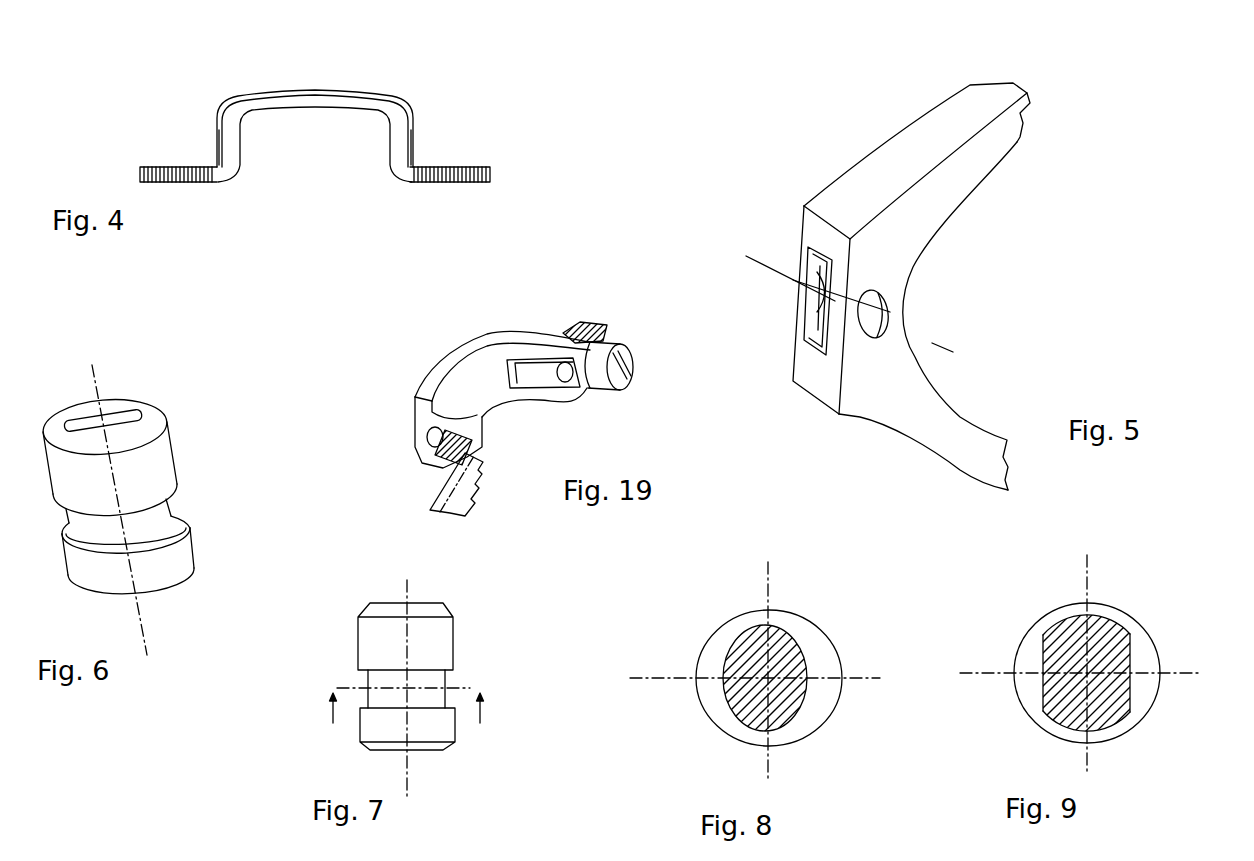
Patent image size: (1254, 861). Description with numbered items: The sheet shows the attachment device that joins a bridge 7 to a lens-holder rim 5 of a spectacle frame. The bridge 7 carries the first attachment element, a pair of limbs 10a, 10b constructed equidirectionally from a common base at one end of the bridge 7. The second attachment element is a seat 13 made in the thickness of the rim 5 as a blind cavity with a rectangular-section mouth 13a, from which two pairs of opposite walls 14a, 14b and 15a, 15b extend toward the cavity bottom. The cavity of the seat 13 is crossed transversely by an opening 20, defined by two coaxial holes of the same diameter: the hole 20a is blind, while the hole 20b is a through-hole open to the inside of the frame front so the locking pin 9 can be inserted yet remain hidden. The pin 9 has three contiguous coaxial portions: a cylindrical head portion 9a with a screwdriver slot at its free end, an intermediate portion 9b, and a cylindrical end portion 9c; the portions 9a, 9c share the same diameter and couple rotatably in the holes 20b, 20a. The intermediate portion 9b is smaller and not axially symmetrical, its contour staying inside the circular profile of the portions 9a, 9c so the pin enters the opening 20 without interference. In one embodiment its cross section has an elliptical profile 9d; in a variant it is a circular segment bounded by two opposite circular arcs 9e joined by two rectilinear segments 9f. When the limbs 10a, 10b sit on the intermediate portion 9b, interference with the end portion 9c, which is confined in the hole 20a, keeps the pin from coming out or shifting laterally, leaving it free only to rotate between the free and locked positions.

In FIG. 5, the rim 5 is at (910, 137).
In FIG. 4, the bridge 7 is at (316, 88).
In FIG. 19, the bridge 7 is at (438, 362).
In FIG. 6, the locking pin 9 is at (148, 504).
In FIG. 19, the locking pin 9 is at (643, 368).
In FIG. 7, the locking pin 9 is at (400, 685).
In FIG. 8, the locking pin 9 is at (762, 690).
In FIG. 9, the locking pin 9 is at (1088, 682).
In FIG. 6, the first cylindrical portion 9a is at (163, 447).
In FIG. 7, the first cylindrical portion 9a is at (367, 637).
In FIG. 8, the first cylindrical portion 9a is at (827, 662).
In FIG. 6, the intermediate portion 9b is at (162, 510).
In FIG. 7, the intermediate portion 9b is at (432, 695).
In FIG. 8, the intermediate portion 9b is at (718, 700).
In FIG. 6, the end portion 9c is at (173, 553).
In FIG. 7, the end portion 9c is at (440, 727).
In FIG. 8, the elliptical profile 9d is at (797, 635).
In FIG. 9, the circular arcs 9e is at (1107, 612).
In FIG. 9, the rectilinear segments 9f is at (1133, 688).
In FIG. 4, the limb 10a is at (187, 183).
In FIG. 19, the limb 10a is at (610, 328).
In FIG. 19, the limb 10b is at (590, 392).
In FIG. 5, the seat 13 is at (831, 329).
In FIG. 5, the mouth 13a is at (813, 330).
In FIG. 5, the wall 14a is at (796, 303).
In FIG. 5, the wall 14b is at (835, 338).
In FIG. 5, the wall 15a is at (798, 262).
In FIG. 5, the wall 15b is at (848, 336).
In FIG. 5, the opening 20 is at (870, 327).
In FIG. 5, the blind hole 20a is at (808, 258).
In FIG. 5, the through-hole 20b is at (885, 305).